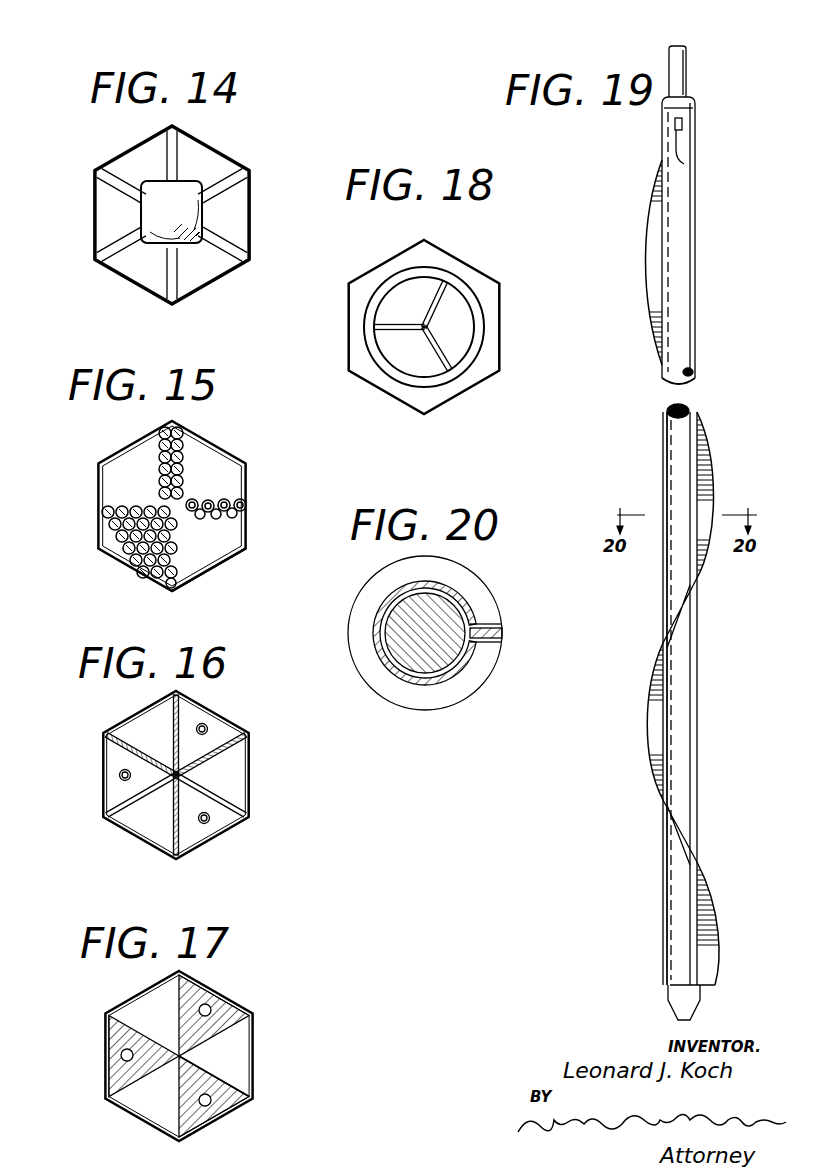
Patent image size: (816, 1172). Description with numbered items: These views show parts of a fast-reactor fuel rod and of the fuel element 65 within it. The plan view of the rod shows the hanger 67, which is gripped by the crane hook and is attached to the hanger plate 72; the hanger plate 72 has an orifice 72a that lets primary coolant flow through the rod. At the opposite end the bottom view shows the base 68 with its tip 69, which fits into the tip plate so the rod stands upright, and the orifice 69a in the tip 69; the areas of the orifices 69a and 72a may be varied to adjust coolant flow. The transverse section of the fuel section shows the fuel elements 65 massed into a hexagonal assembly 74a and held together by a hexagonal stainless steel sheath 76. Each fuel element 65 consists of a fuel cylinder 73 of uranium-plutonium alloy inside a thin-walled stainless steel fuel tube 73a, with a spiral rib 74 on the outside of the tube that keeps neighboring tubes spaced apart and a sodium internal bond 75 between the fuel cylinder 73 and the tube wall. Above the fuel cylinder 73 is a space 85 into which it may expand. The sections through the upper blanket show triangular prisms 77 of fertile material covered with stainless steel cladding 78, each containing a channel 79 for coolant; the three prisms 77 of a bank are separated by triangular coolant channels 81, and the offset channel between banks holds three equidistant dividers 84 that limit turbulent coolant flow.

In FIG. 15, the fuel element 65 is at (118, 482).
In FIG. 19, the fuel element 65 is at (697, 290).
In FIG. 14, the hanger 67 is at (145, 207).
In FIG. 18, the base 68 is at (482, 350).
In FIG. 18, the tip 69 is at (387, 330).
In FIG. 18, the orifice 69a is at (433, 282).
In FIG. 14, the hanger plate 72 is at (242, 231).
In FIG. 14, the orifice 72a is at (150, 157).
In FIG. 15, the fuel cylinder 73 is at (182, 500).
In FIG. 20, the fuel cylinder 73 is at (400, 640).
In FIG. 19, the fuel cylinder 73 is at (677, 225).
In FIG. 20, the fuel tube 73a is at (412, 680).
In FIG. 19, the fuel tube 73a is at (663, 475).
In FIG. 15, the rib 74 is at (236, 503).
In FIG. 20, the rib 74 is at (502, 632).
In FIG. 19, the rib 74 is at (648, 272).
In FIG. 15, the hexagonal assembly 74a is at (198, 567).
In FIG. 20, the internal bond 75 is at (460, 660).
In FIG. 15, the hexagonal sheath 76 is at (246, 538).
In FIG. 16, the triangular prism 77 is at (218, 727).
In FIG. 17, the triangular prism 77 is at (118, 1028).
In FIG. 17, the cladding 78 is at (233, 1087).
In FIG. 16, the channel 79 is at (119, 777).
In FIG. 17, the channel 79 is at (121, 1056).
In FIG. 17, the coolant channel 81 is at (145, 1103).
In FIG. 16, the divider 84 is at (128, 752).
In FIG. 19, the space 85 is at (676, 142).